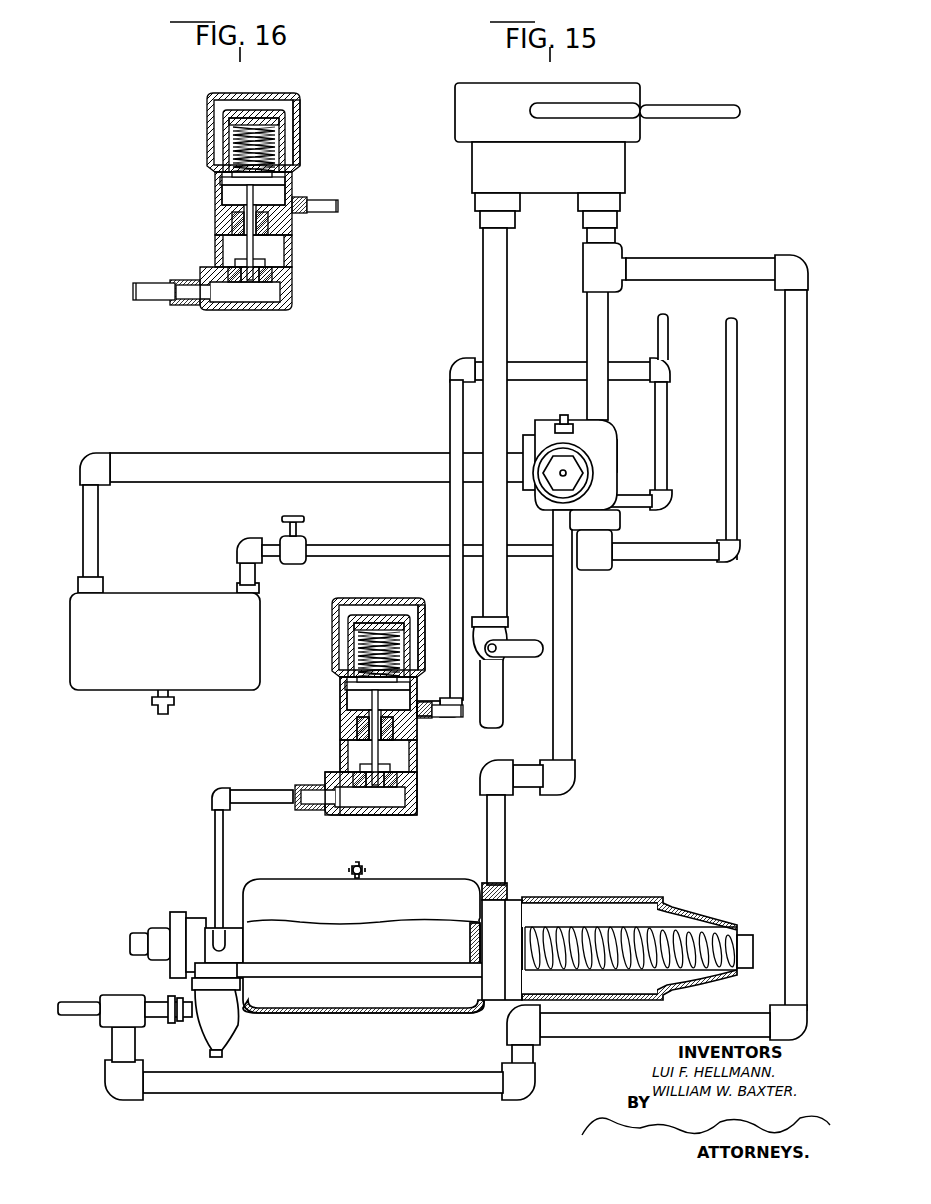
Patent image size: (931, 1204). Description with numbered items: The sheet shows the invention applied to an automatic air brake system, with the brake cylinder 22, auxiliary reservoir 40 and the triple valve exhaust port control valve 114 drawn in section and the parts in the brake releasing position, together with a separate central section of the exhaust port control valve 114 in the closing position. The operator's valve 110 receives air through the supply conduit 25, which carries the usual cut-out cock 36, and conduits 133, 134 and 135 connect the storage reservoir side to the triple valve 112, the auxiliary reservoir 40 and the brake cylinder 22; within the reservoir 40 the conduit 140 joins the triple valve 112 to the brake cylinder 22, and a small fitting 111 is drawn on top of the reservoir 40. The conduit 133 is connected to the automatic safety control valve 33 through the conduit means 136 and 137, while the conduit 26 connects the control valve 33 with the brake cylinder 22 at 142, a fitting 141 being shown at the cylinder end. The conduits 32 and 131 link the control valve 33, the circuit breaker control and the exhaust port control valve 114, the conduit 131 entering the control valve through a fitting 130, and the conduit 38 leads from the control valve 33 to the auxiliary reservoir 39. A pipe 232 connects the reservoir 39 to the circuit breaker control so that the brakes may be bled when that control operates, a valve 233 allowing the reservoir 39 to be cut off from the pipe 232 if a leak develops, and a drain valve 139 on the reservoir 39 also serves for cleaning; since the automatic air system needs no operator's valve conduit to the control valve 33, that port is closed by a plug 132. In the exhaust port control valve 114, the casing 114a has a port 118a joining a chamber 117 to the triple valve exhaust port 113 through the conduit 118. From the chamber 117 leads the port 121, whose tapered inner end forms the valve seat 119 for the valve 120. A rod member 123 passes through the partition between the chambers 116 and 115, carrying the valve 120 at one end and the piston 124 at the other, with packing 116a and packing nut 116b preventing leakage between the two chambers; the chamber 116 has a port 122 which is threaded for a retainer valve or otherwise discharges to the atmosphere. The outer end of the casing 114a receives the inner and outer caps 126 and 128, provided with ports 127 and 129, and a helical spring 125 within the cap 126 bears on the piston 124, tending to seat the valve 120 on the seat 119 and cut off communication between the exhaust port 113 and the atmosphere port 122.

In FIG. 15, the brake cylinder 22 is at (632, 897).
In FIG. 15, the conduit 25 is at (483, 282).
In FIG. 15, the conduit 26 is at (572, 648).
In FIG. 15, the conduit 32 is at (670, 330).
In FIG. 15, the automatic safety control valve 33 is at (607, 570).
In FIG. 15, the cut-out cock 36 is at (505, 634).
In FIG. 15, the conduit 38 is at (292, 470).
In FIG. 15, the auxiliary reservoir 39 is at (185, 593).
In FIG. 15, the auxiliary reservoir 40 is at (292, 880).
In FIG. 15, the operator's valve 110 is at (625, 88).
In FIG. 15, the valve 111 is at (364, 866).
In FIG. 15, the triple valve 112 is at (232, 1035).
In FIG. 15, the triple valve exhaust port 113 is at (205, 925).
In FIG. 15, the triple valve exhaust port control valve 114 is at (352, 746).
In FIG. 15, the casing member 114a is at (403, 793).
In FIG. 16, the chamber 115 is at (228, 195).
In FIG. 15, the chamber 115 is at (355, 696).
In FIG. 16, the chamber 116 is at (235, 250).
In FIG. 15, the chamber 116 is at (354, 752).
In FIG. 15, the packing 116a is at (294, 718).
In FIG. 15, the packing nut 116b is at (420, 693).
In FIG. 16, the chamber 117 is at (240, 295).
In FIG. 15, the chamber 117 is at (371, 806).
In FIG. 16, the conduit 118 is at (158, 292).
In FIG. 15, the conduit 118 is at (214, 822).
In FIG. 16, the port 118a is at (197, 298).
In FIG. 15, the port 118a is at (287, 814).
In FIG. 16, the valve seat 119 is at (240, 272).
In FIG. 15, the valve seat 119 is at (339, 770).
In FIG. 16, the valve 120 is at (268, 262).
In FIG. 15, the valve 120 is at (409, 749).
In FIG. 16, the port 121 is at (254, 282).
In FIG. 15, the port 121 is at (342, 765).
In FIG. 16, the port 122 is at (290, 246).
In FIG. 15, the port 122 is at (411, 770).
In FIG. 16, the rod member 123 is at (224, 238).
In FIG. 15, the rod member 123 is at (356, 701).
In FIG. 16, the piston 124 is at (275, 181).
In FIG. 15, the piston 124 is at (352, 666).
In FIG. 16, the helical spring 125 is at (232, 138).
In FIG. 15, the helical spring 125 is at (401, 626).
In FIG. 16, the cap 126 is at (236, 110).
In FIG. 15, the cap 126 is at (377, 624).
In FIG. 16, the port 127 is at (252, 118).
In FIG. 15, the port 127 is at (385, 598).
In FIG. 16, the cap 128 is at (298, 95).
In FIG. 15, the cap 128 is at (356, 629).
In FIG. 16, the port 129 is at (300, 128).
In FIG. 15, the port 129 is at (438, 637).
In FIG. 16, the outlet fitting 130 is at (300, 199).
In FIG. 15, the outlet fitting 130 is at (438, 694).
In FIG. 16, the conduit 131 is at (332, 210).
In FIG. 15, the plug 132 is at (562, 415).
In FIG. 15, the conduit 133 is at (616, 240).
In FIG. 15, the conduit 134 is at (76, 1017).
In FIG. 15, the conduit 135 is at (150, 1002).
In FIG. 15, the conduit 136 is at (590, 262).
In FIG. 15, the conduit 137 is at (587, 318).
In FIG. 15, the valve 139 is at (152, 705).
In FIG. 15, the conduit 140 is at (340, 975).
In FIG. 15, the fitting 141 is at (515, 905).
In FIG. 15, the brake cylinder connection 142 is at (508, 882).
In FIG. 15, the conduit 232 is at (737, 478).
In FIG. 15, the valve 233 is at (288, 537).